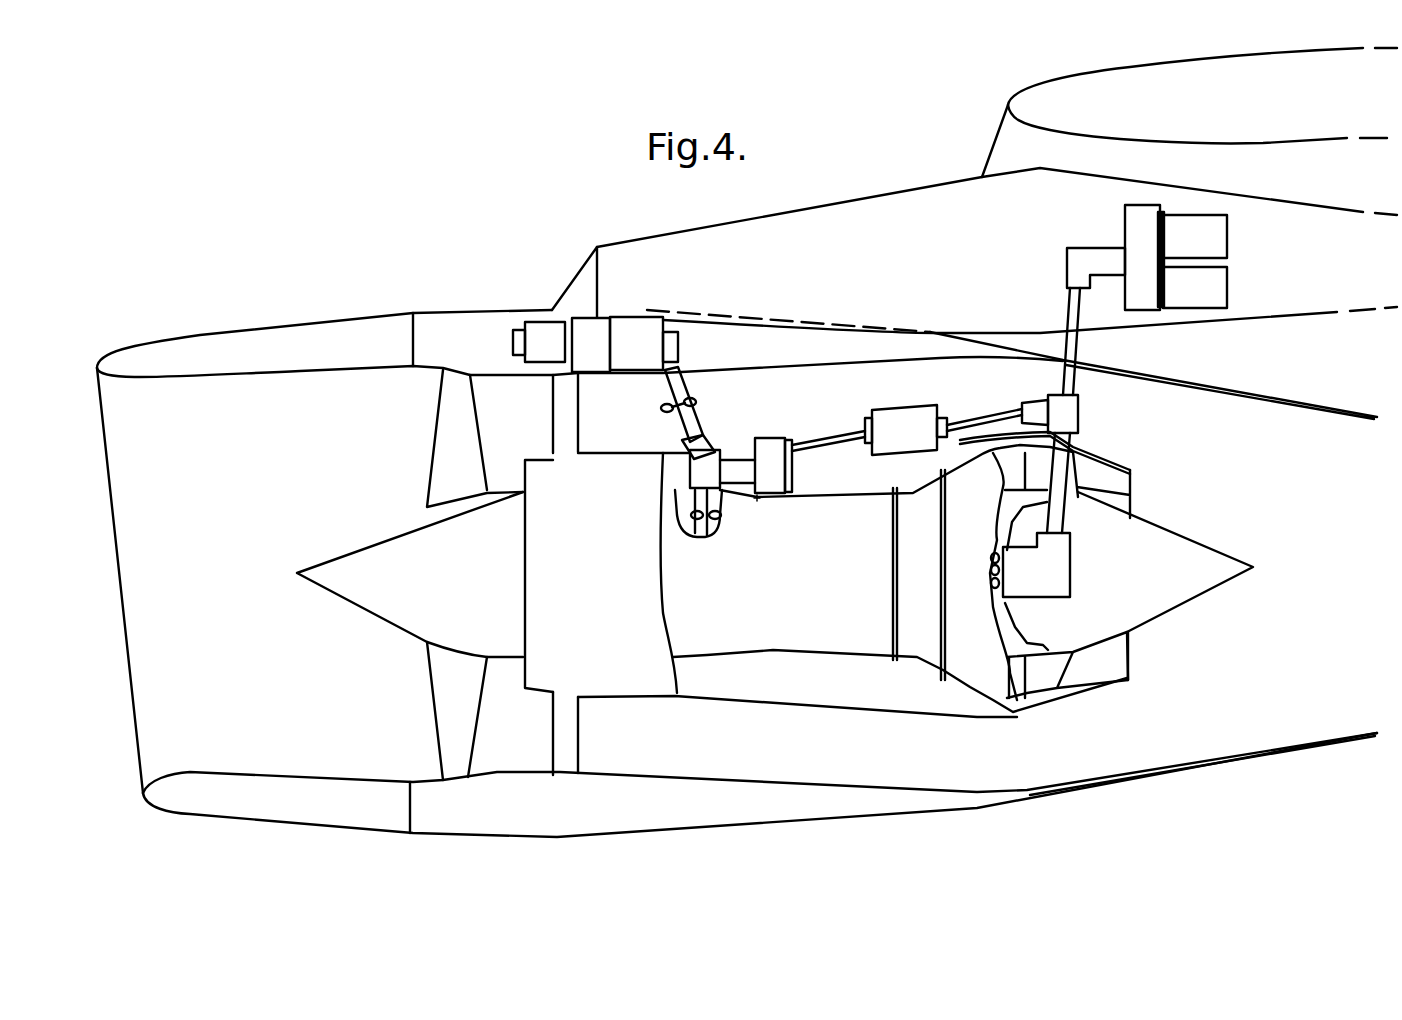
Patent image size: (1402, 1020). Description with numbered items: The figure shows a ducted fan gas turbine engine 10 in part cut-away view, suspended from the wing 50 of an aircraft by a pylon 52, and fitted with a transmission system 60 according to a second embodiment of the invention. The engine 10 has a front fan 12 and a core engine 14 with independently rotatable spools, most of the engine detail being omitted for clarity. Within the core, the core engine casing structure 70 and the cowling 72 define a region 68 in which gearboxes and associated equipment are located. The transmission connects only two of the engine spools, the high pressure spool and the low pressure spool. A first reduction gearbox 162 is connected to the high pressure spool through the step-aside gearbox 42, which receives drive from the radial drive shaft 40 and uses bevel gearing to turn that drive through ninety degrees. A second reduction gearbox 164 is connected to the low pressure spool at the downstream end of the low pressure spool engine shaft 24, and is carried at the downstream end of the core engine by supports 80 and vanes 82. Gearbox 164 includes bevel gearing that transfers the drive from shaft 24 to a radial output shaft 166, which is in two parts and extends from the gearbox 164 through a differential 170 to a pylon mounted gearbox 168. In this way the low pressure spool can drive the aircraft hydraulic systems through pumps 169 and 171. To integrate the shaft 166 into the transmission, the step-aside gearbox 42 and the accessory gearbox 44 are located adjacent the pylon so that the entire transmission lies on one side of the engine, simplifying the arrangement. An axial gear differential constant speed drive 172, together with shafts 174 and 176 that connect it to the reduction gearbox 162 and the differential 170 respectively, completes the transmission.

The ducted fan gas turbine engine 10 is at (475, 258).
The front fan 12 is at (450, 717).
The core engine 14 is at (557, 675).
The low pressure spool engine shaft 24 is at (990, 572).
The radial drive shaft 40 is at (707, 533).
The step-aside gearbox 42 is at (712, 453).
The accessory gearbox 44 is at (647, 358).
The wing 50 is at (1027, 105).
The pylon 52 is at (1338, 313).
The transmission system 60 is at (898, 408).
The region 68 is at (812, 691).
The core engine casing structure 70 is at (770, 652).
The cowling 72 is at (847, 707).
The supports 80 is at (1013, 623).
The vanes 82 is at (1127, 493).
The first reduction gearbox 162 is at (783, 480).
The second reduction gearbox 164 is at (1055, 570).
The radial output shaft 166 is at (1057, 453).
The pylon mounted gearbox 168 is at (1077, 258).
The pump 169 is at (1215, 247).
The differential 170 is at (1063, 415).
The pump 171 is at (1215, 297).
The axial gear differential constant speed drive 172 is at (893, 453).
The shaft 174 is at (832, 440).
The shaft 176 is at (975, 418).